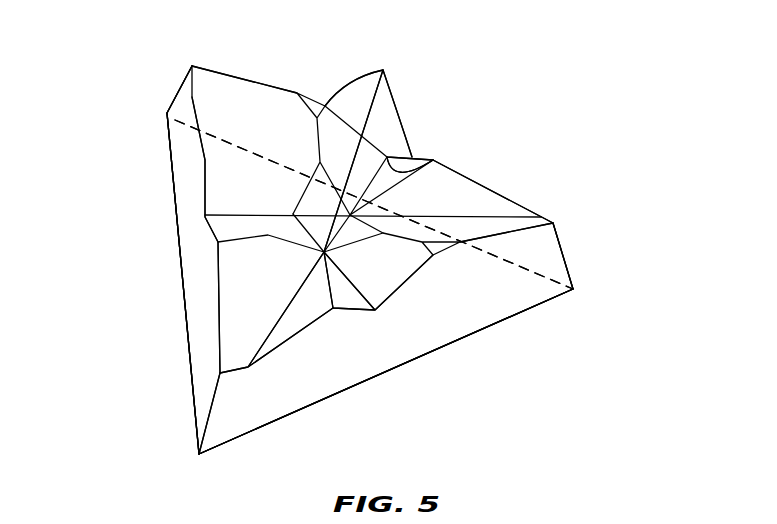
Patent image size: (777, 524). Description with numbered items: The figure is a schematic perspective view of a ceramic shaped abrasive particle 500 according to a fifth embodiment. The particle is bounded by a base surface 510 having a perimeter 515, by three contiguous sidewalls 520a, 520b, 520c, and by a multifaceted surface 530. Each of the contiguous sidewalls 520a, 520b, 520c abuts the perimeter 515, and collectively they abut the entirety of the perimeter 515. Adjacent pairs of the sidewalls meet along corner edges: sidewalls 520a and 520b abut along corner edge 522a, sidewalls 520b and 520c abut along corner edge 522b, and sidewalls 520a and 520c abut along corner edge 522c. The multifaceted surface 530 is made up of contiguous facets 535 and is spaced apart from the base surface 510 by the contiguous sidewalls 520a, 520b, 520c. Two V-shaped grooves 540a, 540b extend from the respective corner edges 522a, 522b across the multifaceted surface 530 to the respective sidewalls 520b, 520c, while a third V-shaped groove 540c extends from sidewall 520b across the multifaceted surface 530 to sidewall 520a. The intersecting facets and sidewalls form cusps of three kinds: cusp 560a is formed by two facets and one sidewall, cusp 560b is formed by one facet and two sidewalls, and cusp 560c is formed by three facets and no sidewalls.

The ceramic shaped abrasive particle 500 is at (585, 79).
The base surface 510 is at (467, 340).
The perimeter 515 is at (183, 315).
The contiguous sidewall 520a is at (510, 290).
The contiguous sidewall 520b is at (485, 188).
The contiguous sidewall 520c is at (205, 350).
The corner edge 522a is at (566, 257).
The corner edge 522b is at (183, 96).
The corner edge 522c is at (200, 418).
The multifaceted surface 530 is at (268, 123).
The contiguous facets 535 is at (368, 149).
The V-shaped groove 540a is at (233, 215).
The V-shaped groove 540b is at (200, 125).
The V-shaped groove 540c is at (433, 160).
The cusp 560a is at (377, 313).
The cusp 560b is at (220, 373).
The cusp 560c is at (218, 245).